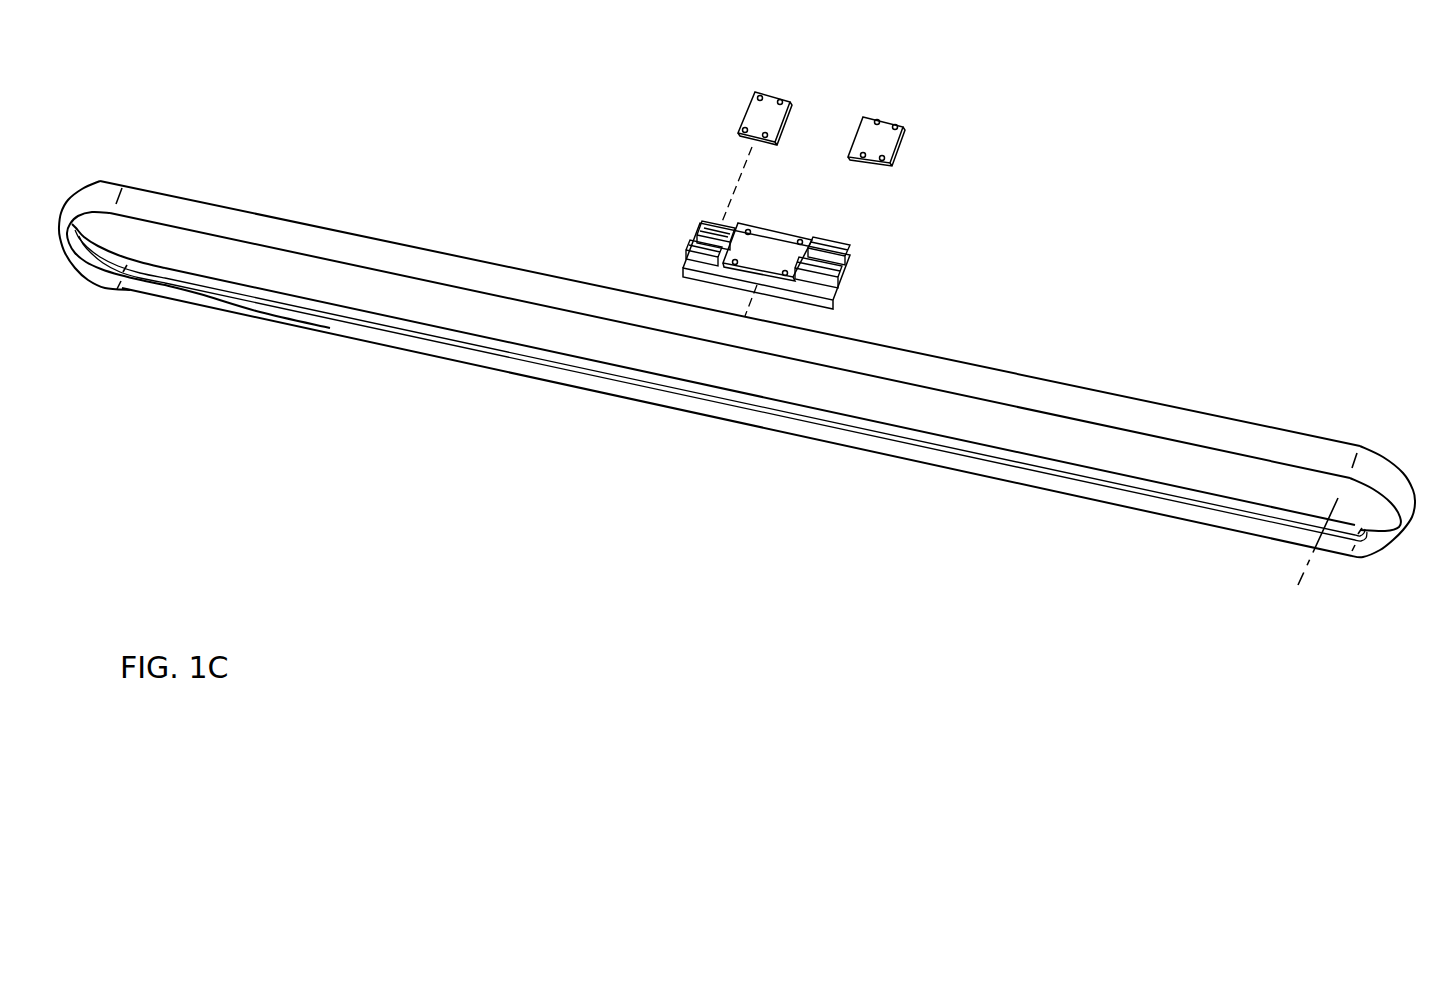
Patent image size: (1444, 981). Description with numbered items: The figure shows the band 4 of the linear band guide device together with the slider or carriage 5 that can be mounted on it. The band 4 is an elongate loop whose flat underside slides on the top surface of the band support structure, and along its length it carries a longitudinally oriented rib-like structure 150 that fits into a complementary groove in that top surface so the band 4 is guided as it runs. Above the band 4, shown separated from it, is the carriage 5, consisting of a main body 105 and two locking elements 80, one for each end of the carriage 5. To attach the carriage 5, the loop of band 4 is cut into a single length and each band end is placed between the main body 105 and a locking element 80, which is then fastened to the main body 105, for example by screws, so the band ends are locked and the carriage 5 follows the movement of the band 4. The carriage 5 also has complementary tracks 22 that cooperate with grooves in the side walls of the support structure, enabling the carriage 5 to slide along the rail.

The band 4 is at (1058, 388).
The rib-like structure 150 is at (203, 293).
The slider or carriage 5 is at (738, 52).
The locking elements 80 is at (867, 117).
The main body 105 is at (765, 228).
The complementary tracks 22 is at (848, 268).